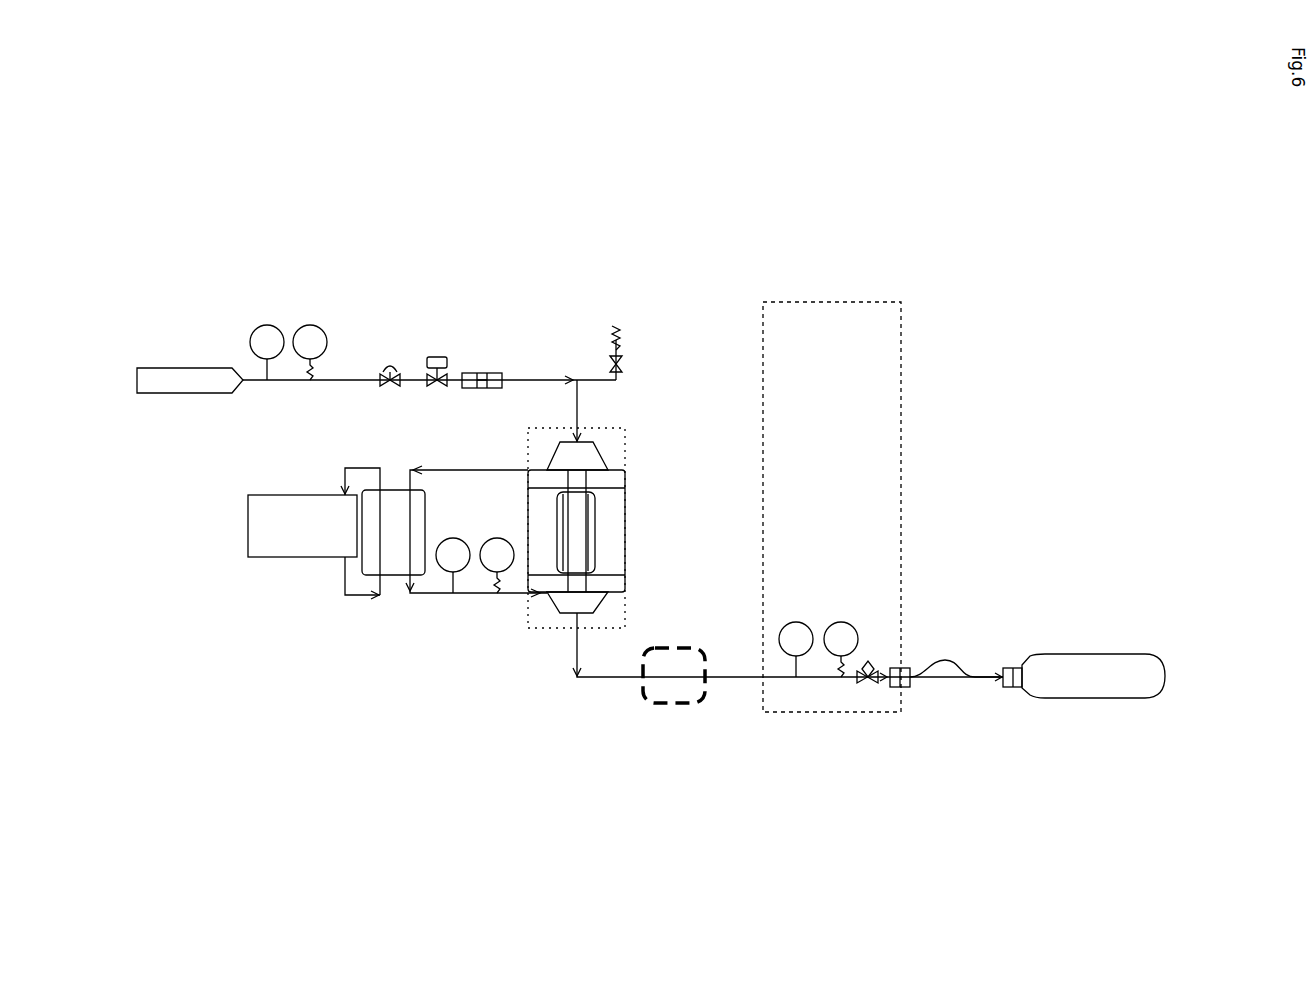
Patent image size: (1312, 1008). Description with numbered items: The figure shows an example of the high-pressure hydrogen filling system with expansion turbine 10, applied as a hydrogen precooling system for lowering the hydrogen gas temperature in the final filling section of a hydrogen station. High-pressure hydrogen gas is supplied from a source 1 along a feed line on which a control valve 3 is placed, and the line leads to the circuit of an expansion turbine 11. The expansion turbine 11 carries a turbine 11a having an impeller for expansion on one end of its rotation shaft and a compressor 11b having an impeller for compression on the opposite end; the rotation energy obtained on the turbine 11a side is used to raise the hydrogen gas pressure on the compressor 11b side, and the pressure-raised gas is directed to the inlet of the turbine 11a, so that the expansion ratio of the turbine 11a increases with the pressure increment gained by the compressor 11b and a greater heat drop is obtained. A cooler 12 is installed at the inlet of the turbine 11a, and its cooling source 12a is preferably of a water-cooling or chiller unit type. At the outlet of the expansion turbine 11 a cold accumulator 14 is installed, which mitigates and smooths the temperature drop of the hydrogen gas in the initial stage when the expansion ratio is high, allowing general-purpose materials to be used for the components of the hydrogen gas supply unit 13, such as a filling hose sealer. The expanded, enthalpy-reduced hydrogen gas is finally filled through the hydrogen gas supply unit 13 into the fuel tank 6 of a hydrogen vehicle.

The hydrogen gas supply source 1 is at (150, 368).
The control valve 3 is at (444, 352).
The fuel tank 6 is at (1067, 650).
The high-pressure hydrogen filling system with expansion turbine 10 is at (268, 665).
The expansion turbine 11 is at (625, 552).
The turbine 11a is at (545, 593).
The compressor 11b is at (587, 455).
The cooler 12 is at (393, 575).
The cooling source 12a is at (302, 526).
The hydrogen gas supply unit 13 is at (890, 467).
The cold accumulator 14 is at (698, 704).